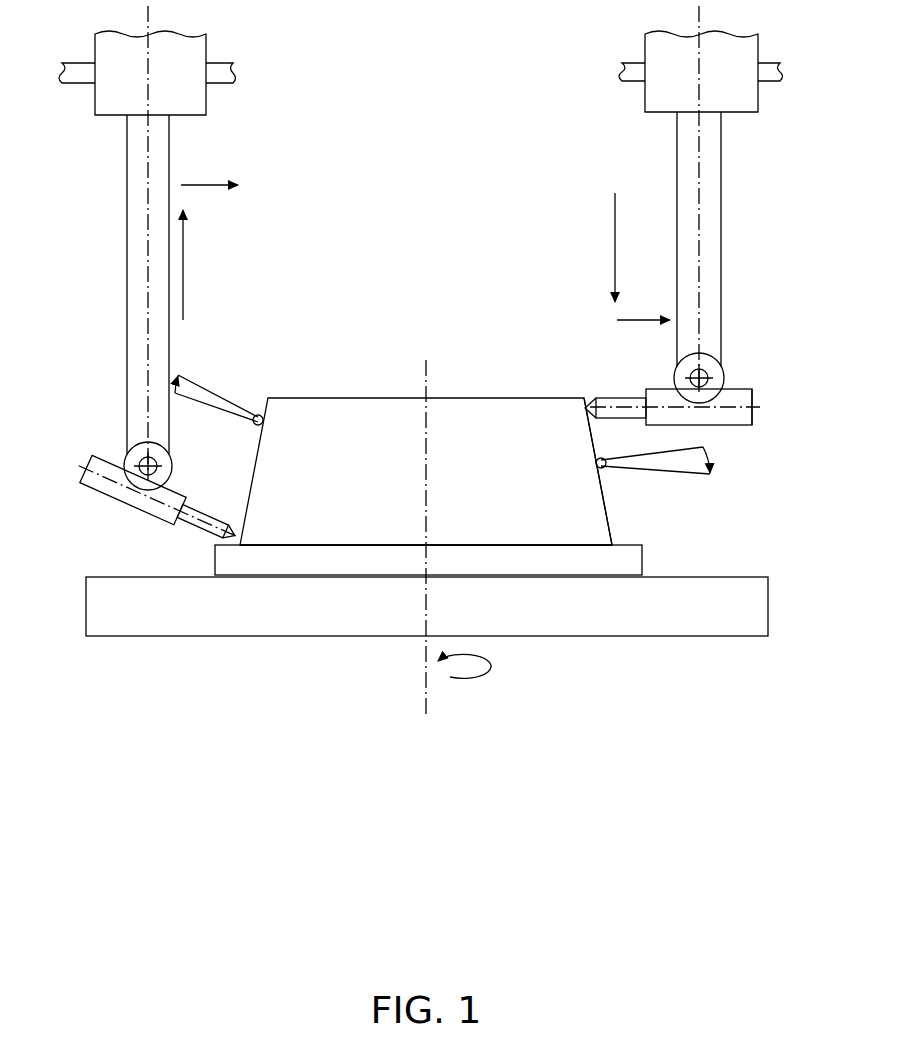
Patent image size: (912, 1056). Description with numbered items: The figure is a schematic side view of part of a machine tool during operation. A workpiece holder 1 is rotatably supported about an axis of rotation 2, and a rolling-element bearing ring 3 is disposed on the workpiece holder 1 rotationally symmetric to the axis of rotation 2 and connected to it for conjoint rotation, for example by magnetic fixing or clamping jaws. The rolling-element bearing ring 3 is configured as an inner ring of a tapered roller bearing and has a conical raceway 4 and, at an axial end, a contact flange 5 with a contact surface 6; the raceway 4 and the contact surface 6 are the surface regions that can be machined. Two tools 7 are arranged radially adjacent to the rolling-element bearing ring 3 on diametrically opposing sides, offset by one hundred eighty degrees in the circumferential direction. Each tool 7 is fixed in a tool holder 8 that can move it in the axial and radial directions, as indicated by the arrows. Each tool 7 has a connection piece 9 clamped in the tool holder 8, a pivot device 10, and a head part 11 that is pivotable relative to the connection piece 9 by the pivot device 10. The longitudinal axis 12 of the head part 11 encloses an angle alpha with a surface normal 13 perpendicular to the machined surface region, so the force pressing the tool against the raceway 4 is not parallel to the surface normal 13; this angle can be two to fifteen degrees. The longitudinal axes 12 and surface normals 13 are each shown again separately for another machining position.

The workpiece holder 1 is at (507, 635).
The axis of rotation 2 is at (423, 703).
The rolling-element bearing ring 3 is at (380, 390).
The conical raceway 4 is at (611, 507).
The contact flange 5 is at (645, 560).
The contact surface 6 is at (624, 543).
The tool 7 is at (765, 423).
The tool holder 8 is at (764, 52).
The connection piece 9 is at (722, 183).
The pivot device 10 is at (723, 371).
The head part 11 is at (755, 395).
The longitudinal axis 12 is at (210, 383).
The surface normal 13 is at (195, 395).